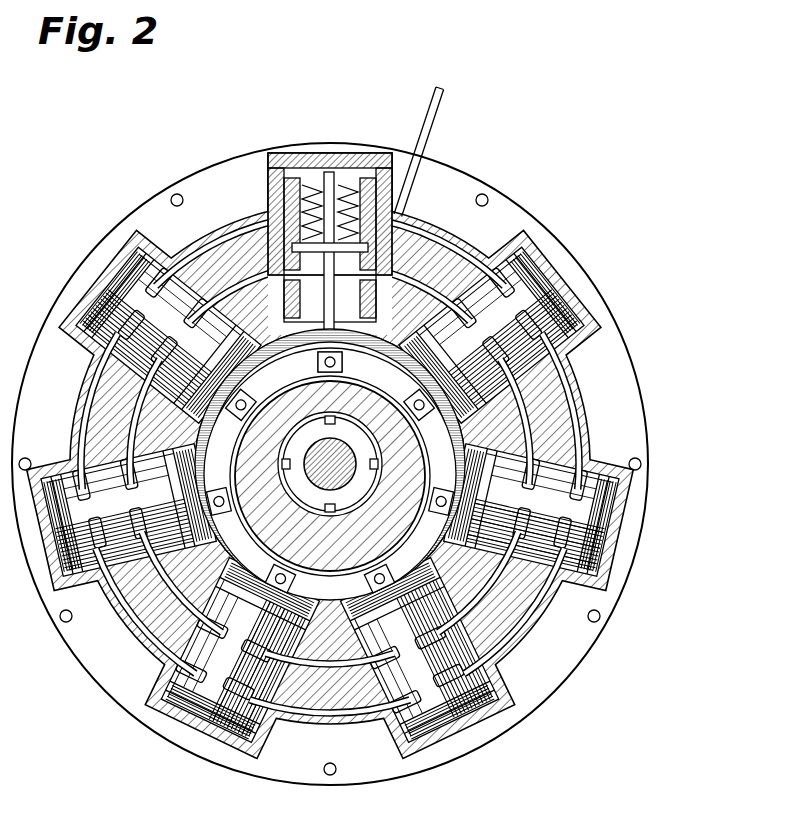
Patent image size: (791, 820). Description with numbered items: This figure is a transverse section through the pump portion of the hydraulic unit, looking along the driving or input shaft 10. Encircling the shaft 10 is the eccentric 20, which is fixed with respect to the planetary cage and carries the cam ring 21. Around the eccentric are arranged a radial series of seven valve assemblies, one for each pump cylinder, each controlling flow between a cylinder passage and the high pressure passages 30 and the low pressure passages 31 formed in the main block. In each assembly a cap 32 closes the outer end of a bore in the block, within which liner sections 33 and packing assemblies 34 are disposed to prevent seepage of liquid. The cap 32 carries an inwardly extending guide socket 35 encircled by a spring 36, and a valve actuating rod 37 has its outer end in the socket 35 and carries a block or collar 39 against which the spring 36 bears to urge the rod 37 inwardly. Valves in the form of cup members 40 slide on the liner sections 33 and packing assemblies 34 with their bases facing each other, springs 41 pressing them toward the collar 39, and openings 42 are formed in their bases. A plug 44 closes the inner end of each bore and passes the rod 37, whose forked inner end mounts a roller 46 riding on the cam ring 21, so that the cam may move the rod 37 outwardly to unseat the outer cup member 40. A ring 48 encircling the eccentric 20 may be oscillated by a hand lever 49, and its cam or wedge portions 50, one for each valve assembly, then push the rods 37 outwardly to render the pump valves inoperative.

The driving or input shaft 10 is at (332, 456).
The eccentric 20 is at (256, 430).
The cam ring 21 is at (320, 572).
The high pressure passages 30 is at (530, 620).
The low pressure passages 31 is at (550, 628).
The cap 32 is at (452, 740).
The liner sections 33 is at (152, 718).
The packing assemblies 34 is at (160, 690).
The guide socket 35 is at (350, 175).
The spring 36 is at (303, 162).
The valve actuating rod 37 is at (282, 205).
The block or collar 39 is at (268, 238).
The cup members 40 is at (400, 210).
The springs 41 is at (370, 178).
The openings 42 is at (385, 300).
The plug 44 is at (310, 354).
The roller 46 is at (262, 678).
The ring 48 is at (372, 358).
The hand lever 49 is at (447, 100).
The cam or wedge portions 50 is at (428, 444).